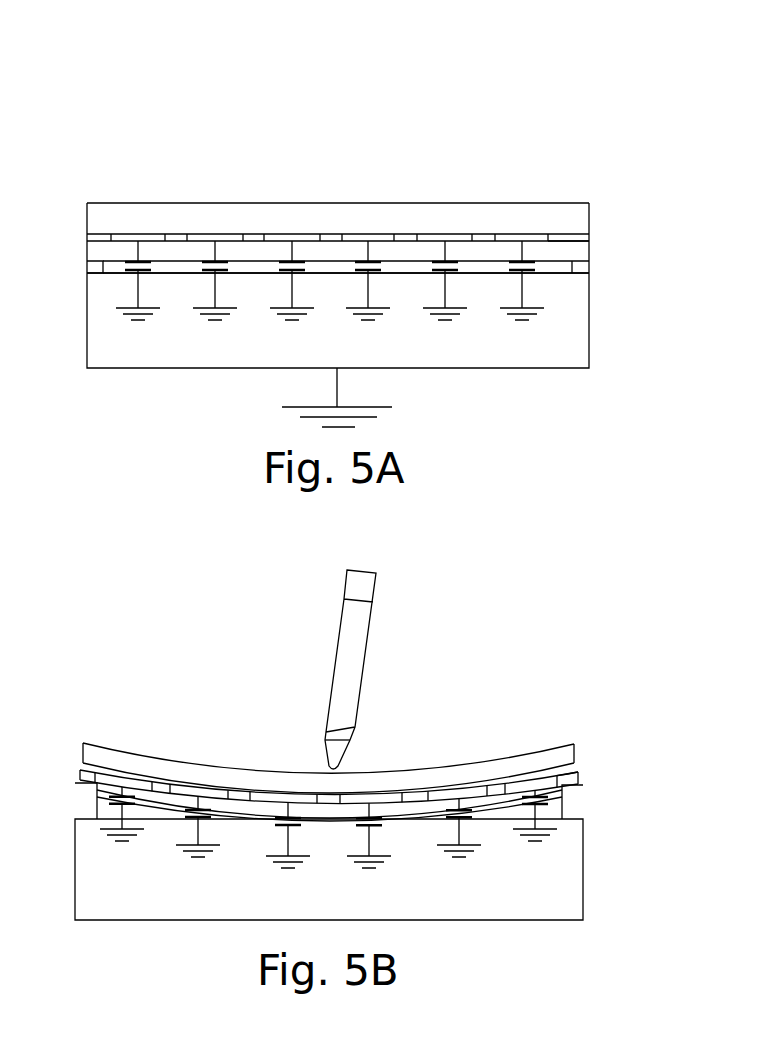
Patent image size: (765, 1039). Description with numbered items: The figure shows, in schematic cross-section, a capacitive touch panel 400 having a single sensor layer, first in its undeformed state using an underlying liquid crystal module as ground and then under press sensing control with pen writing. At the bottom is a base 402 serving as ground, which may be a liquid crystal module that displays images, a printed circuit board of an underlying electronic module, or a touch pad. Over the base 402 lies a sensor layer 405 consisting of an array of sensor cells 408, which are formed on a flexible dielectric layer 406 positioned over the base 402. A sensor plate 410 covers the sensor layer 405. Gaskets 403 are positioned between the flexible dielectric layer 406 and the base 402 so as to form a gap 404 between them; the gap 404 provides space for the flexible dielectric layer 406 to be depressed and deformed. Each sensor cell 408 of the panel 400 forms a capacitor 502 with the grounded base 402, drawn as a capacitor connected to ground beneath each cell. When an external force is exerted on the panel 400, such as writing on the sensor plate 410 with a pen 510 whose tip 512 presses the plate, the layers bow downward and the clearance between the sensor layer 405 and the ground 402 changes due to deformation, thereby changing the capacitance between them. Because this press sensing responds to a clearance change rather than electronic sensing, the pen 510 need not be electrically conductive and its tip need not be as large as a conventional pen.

In FIG. 5A, the capacitive touch panel 400 is at (166, 108).
In FIG. 5B, the capacitive touch panel 400 is at (152, 613).
In FIG. 5A, the base 402 is at (338, 315).
In FIG. 5B, the base 402 is at (329, 869).
In FIG. 5A, the gaskets 403 is at (95, 265).
In FIG. 5B, the gaskets 403 is at (78, 807).
In FIG. 5A, the gap 404 is at (188, 270).
In FIG. 5B, the gap 404 is at (147, 810).
In FIG. 5A, the sensor layer 405 is at (592, 237).
In FIG. 5B, the sensor layer 405 is at (573, 768).
In FIG. 5A, the flexible dielectric layer 406 is at (245, 252).
In FIG. 5B, the flexible dielectric layer 406 is at (203, 808).
In FIG. 5A, the sensor cells 408 is at (302, 237).
In FIG. 5B, the sensor cells 408 is at (280, 803).
In FIG. 5A, the sensor plate 410 is at (537, 217).
In FIG. 5B, the sensor plate 410 is at (460, 773).
In FIG. 5A, the capacitor 502 is at (292, 288).
In FIG. 5B, the capacitor 502 is at (285, 837).
In FIG. 5B, the pen 510 is at (365, 610).
In FIG. 5B, the stylus tip 512 is at (325, 743).